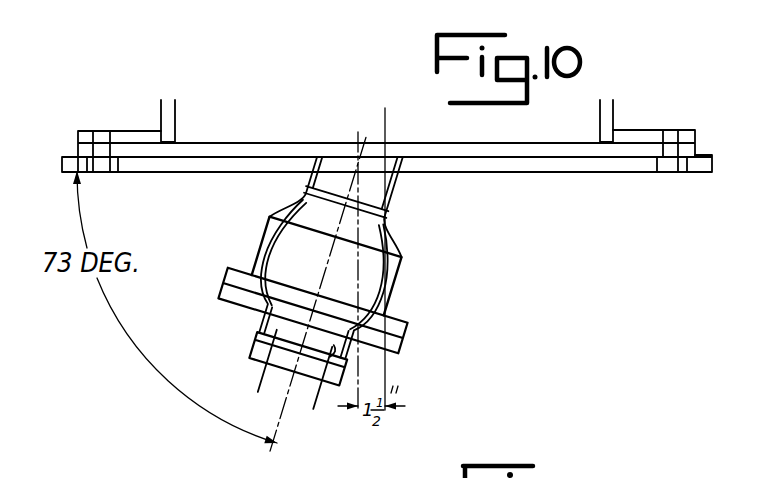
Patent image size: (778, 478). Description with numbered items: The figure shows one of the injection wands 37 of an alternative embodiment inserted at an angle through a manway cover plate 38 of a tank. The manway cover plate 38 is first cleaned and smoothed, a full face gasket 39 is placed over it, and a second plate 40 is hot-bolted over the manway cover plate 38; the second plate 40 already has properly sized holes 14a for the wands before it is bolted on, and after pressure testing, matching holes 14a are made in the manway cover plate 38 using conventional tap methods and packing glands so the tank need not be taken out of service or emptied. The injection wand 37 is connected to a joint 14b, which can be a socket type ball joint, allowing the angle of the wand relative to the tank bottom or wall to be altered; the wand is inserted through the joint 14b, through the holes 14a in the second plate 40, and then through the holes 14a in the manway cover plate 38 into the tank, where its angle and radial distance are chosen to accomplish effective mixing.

The opening 14a is at (390, 158).
The joint 14b is at (337, 278).
The injection wand 37 is at (323, 408).
The manway cover plate 38 is at (232, 150).
The full face gasket 39 is at (150, 158).
The second plate 40 is at (203, 172).